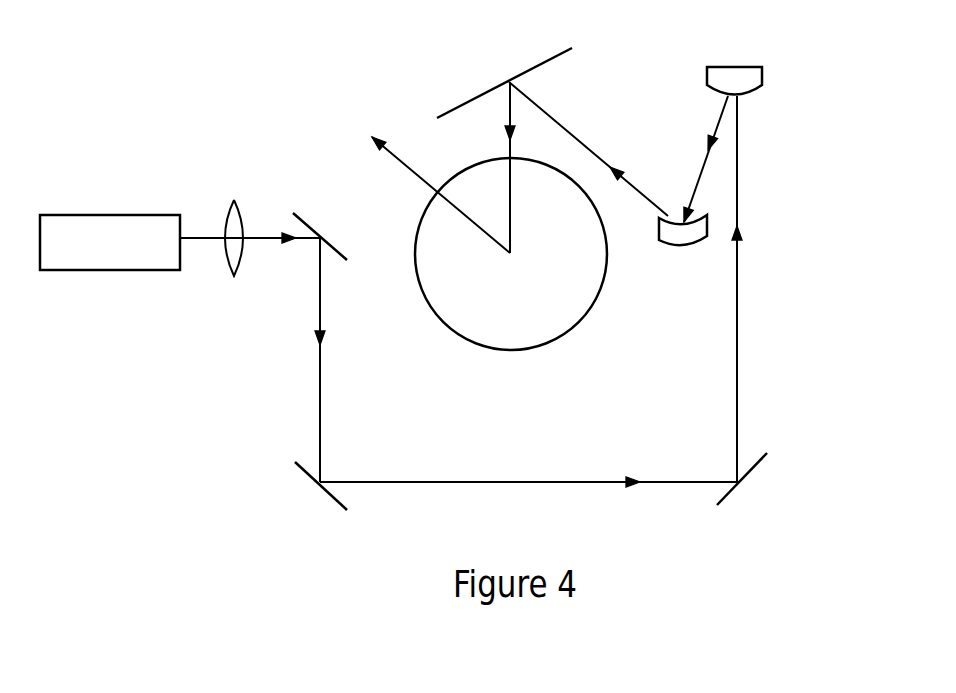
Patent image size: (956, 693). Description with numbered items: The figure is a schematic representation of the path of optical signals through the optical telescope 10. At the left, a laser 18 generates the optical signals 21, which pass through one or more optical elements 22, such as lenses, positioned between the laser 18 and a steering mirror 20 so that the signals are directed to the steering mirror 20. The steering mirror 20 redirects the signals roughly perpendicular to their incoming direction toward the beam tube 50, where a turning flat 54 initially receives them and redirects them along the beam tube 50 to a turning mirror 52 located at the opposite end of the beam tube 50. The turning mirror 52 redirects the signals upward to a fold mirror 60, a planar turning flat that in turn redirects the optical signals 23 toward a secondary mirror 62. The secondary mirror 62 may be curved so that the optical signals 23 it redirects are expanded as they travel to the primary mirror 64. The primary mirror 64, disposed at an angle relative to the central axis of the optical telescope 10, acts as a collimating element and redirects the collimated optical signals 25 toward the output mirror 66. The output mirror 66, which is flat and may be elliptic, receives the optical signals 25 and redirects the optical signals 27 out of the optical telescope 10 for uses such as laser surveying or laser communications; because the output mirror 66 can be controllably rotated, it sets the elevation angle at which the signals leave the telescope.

The optical telescope 10 is at (782, 193).
The laser 18 is at (111, 214).
The steering mirror 20 is at (312, 225).
The optical signals 21 is at (202, 242).
The optical elements 22 is at (243, 218).
The optical signals 23 is at (709, 135).
The optical signals 25 is at (573, 134).
The optical signals 27 is at (508, 155).
The beam tube 50 is at (447, 485).
The turning mirror 52 is at (750, 470).
The turning flat 54 is at (303, 472).
The fold mirror 60 is at (741, 67).
The secondary mirror 62 is at (700, 243).
The primary mirror 64 is at (538, 64).
The output mirror 66 is at (450, 330).